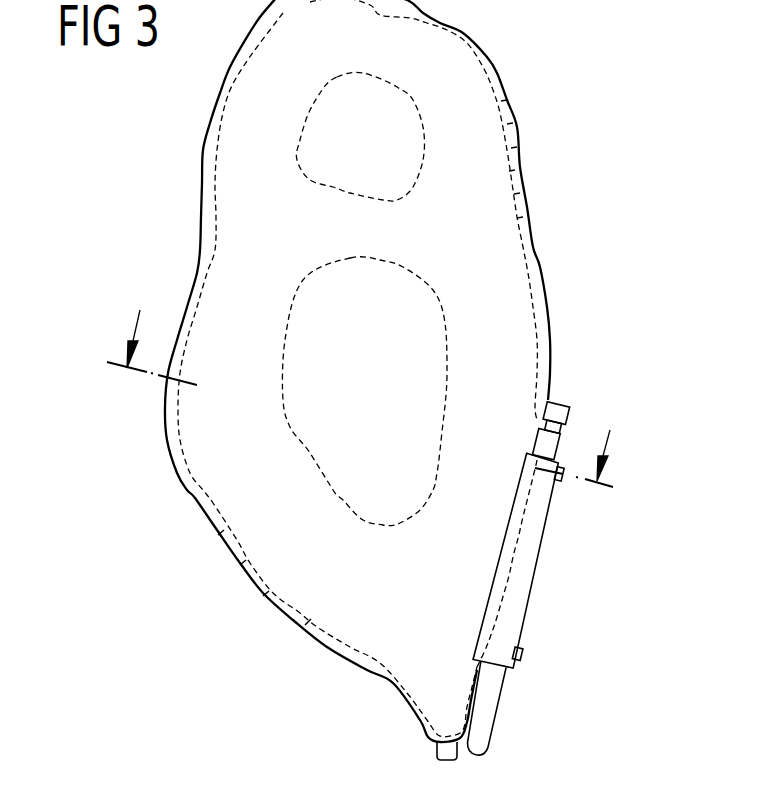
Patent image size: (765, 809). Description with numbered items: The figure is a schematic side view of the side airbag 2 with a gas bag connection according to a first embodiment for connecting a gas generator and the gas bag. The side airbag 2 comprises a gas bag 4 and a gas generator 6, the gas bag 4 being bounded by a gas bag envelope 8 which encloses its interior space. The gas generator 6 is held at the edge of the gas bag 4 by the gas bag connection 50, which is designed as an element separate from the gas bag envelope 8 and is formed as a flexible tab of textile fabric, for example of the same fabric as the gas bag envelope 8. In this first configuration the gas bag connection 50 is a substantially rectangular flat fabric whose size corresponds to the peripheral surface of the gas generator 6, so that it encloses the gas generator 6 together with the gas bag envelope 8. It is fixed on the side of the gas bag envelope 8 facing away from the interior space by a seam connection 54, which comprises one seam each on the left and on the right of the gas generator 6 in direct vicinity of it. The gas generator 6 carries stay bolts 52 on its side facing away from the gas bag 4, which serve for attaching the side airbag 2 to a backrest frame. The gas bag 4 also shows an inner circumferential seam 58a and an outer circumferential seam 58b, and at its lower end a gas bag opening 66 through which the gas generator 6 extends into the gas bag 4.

The side airbag 2 is at (588, 227).
The gas bag 4 is at (370, 399).
The gas generator 6 is at (563, 440).
The gas bag envelope 8 is at (203, 147).
The gas bag connection 50 is at (518, 583).
The stay bolts 52 is at (561, 481).
The seam connection 54 is at (513, 565).
The inner circumferential seam 58a is at (410, 193).
The outer circumferential seam 58b is at (307, 624).
The gas bag opening 66 is at (437, 743).